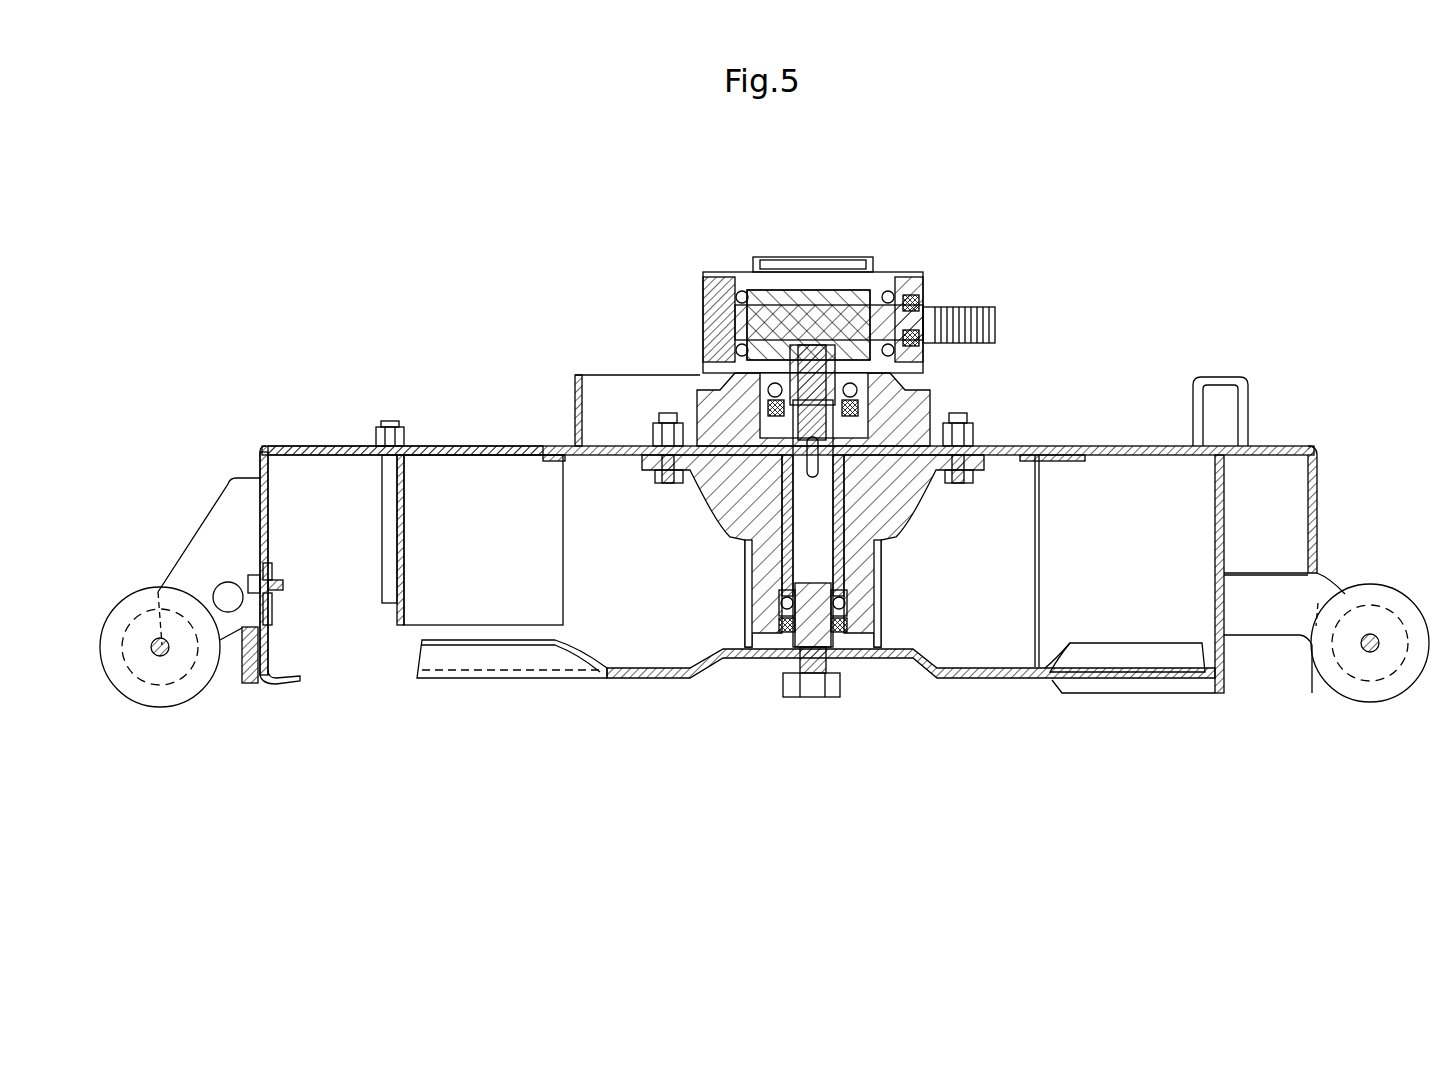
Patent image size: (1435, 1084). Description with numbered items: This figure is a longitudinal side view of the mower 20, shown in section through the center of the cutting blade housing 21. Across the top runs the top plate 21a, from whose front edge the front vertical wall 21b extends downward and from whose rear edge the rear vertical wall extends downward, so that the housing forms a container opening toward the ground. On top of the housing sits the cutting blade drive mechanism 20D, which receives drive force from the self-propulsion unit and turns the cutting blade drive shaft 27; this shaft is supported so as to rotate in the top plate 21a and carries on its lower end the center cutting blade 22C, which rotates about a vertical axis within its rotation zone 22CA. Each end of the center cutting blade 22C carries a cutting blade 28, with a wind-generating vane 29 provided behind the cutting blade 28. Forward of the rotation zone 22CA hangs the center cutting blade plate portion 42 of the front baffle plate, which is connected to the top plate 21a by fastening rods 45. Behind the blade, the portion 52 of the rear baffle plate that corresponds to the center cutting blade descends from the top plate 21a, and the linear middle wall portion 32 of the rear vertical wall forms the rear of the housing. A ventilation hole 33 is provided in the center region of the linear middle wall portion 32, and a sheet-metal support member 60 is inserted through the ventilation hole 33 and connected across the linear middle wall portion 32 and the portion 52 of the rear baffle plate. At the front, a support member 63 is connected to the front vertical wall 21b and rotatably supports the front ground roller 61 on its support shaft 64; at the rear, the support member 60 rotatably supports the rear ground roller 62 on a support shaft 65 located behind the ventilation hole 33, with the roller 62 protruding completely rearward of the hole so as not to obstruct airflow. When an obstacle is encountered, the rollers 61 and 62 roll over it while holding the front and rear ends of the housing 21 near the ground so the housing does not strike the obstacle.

The mower 20 is at (352, 318).
The cutting blade drive mechanism 20D is at (697, 298).
The cutting blade housing 21 is at (1114, 446).
The top plate 21a is at (346, 446).
The front vertical wall 21b is at (256, 497).
The center cutting blade 22C is at (948, 682).
The rotation zone of the center cutting blade 22CA is at (647, 592).
The cutting blade drive shaft 27 is at (823, 494).
The cutting blade 28 is at (1130, 684).
The wind-generating vane 29 is at (492, 656).
The linear middle wall portion 32 is at (1316, 504).
The ventilation hole 33 is at (1336, 572).
The center cutting blade plate portion 42 is at (402, 476).
The fastening rod 45 is at (386, 489).
The portion corresponding to the center cutting blade 52 is at (1215, 532).
The support member 60 is at (1270, 582).
The front ground roller 61 is at (178, 698).
The rear ground roller 62 is at (1375, 698).
The support member 63 is at (202, 535).
The support shaft 64 is at (160, 653).
The support shaft 65 is at (1364, 650).